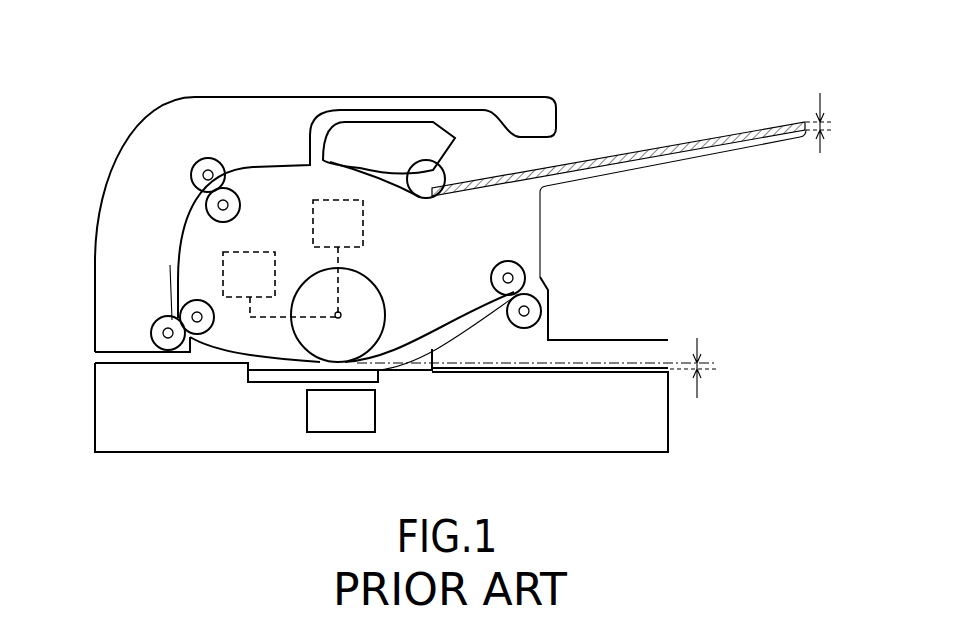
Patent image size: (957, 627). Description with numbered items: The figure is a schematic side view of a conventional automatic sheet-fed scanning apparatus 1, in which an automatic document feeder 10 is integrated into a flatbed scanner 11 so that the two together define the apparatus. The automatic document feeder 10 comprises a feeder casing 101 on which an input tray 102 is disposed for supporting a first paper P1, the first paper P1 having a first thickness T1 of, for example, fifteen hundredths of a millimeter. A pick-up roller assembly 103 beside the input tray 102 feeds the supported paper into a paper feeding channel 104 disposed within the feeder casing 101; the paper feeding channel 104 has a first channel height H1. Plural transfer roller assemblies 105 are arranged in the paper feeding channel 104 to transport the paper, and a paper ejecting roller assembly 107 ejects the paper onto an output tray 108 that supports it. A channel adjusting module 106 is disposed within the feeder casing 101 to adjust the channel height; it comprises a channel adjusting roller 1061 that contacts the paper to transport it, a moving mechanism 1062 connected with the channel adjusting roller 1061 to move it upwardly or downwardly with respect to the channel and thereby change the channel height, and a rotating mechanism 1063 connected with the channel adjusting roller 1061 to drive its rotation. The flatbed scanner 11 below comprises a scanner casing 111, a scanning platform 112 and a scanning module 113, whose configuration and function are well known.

The automatic sheet-fed scanning apparatus 1 is at (681, 47).
The automatic document feeder 10 is at (142, 173).
The flatbed scanner 11 is at (112, 422).
The feeder casing 101 is at (113, 323).
The input tray 102 is at (668, 157).
The pick-up roller assembly 103 is at (430, 138).
The paper feeding channel 104 is at (170, 265).
The transfer roller assemblies 105 is at (207, 158).
The channel adjusting module 106 is at (402, 50).
The channel adjusting roller 1061 is at (367, 303).
The moving mechanism 1062 is at (328, 217).
The rotating mechanism 1063 is at (260, 268).
The paper ejecting roller assembly 107 is at (517, 276).
The output tray 108 is at (588, 350).
The scanner casing 111 is at (600, 432).
The scanning platform 112 is at (303, 374).
The scanning module 113 is at (360, 407).
The first paper P1 is at (720, 137).
The first thickness T1 is at (834, 123).
The first channel height H1 is at (552, 368).